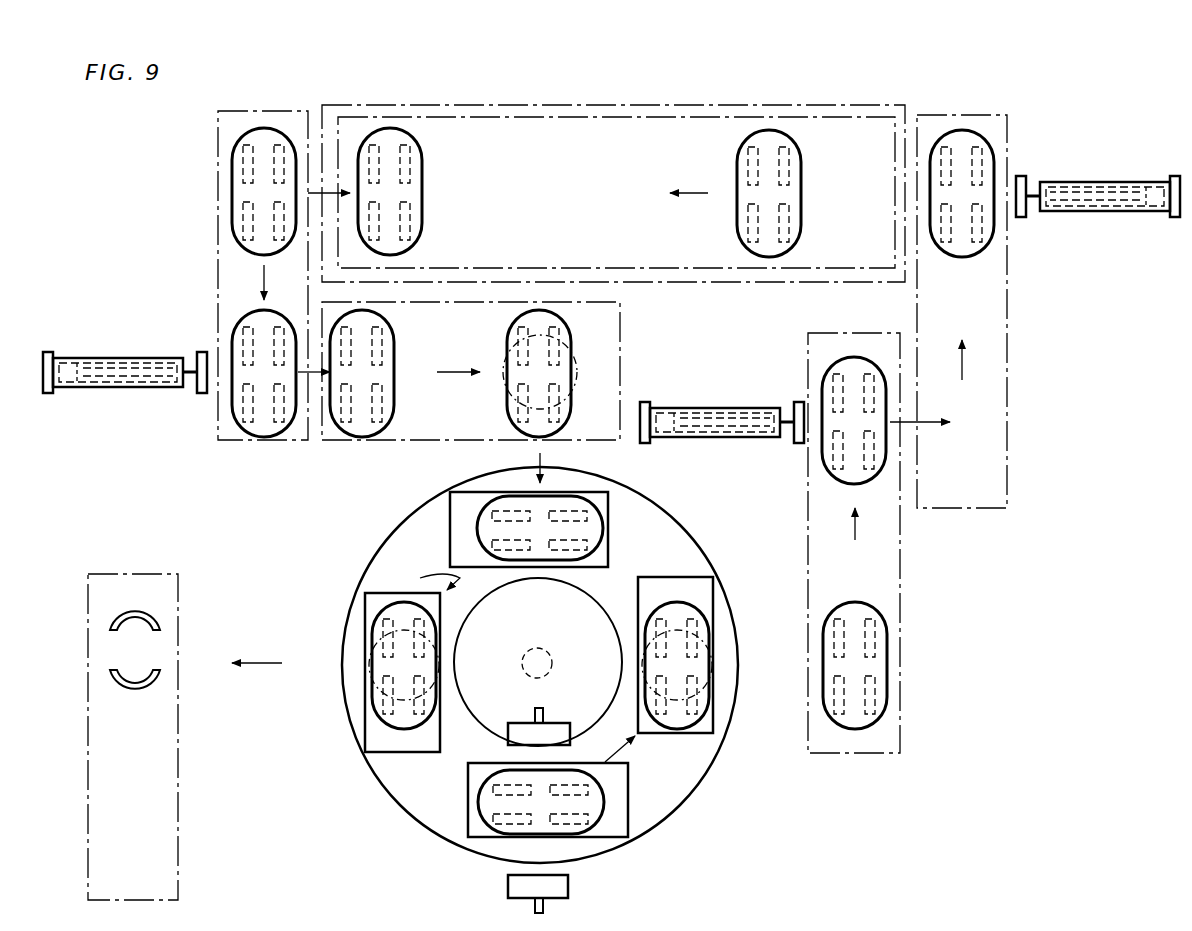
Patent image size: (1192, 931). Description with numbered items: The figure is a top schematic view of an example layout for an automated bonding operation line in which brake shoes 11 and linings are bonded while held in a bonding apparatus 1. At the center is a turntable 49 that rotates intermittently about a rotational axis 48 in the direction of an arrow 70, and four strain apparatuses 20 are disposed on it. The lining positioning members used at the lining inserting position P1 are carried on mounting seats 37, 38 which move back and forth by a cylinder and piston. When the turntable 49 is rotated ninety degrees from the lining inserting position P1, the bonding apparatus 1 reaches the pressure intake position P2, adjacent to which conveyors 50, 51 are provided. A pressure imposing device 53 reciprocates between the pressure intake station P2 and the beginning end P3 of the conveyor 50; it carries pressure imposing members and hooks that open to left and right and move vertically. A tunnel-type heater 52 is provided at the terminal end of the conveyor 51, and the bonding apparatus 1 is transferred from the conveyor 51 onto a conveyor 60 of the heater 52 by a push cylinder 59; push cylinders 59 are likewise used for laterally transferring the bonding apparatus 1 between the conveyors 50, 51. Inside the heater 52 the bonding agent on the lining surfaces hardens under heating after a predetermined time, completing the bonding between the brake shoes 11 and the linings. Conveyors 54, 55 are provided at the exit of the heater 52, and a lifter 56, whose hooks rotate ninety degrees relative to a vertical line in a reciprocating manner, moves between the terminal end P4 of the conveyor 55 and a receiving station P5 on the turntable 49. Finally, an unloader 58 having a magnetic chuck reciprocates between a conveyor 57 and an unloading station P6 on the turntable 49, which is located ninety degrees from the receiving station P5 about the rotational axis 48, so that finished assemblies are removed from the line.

The bonding apparatus 1 is at (232, 165).
The brake shoe 11 is at (148, 613).
The strain apparatus 20 is at (608, 525).
The mounting seat 37 is at (560, 722).
The mounting seat 38 is at (520, 888).
The rotational axis 48 is at (548, 648).
The turntable 49 is at (680, 793).
The conveyor 50 is at (900, 540).
The conveyor 51 is at (1010, 385).
The heater 52 is at (830, 105).
The pressure imposing device 53 is at (700, 645).
The conveyor 54 is at (218, 220).
The conveyor 55 is at (380, 440).
The lifter 56 is at (578, 380).
The conveyor 57 is at (180, 750).
The unloader 58 is at (372, 660).
The push cylinder 59 is at (152, 387).
The conveyor 60 is at (883, 117).
The arrow 70 is at (428, 568).
The lining inserting position P1 is at (635, 830).
The pressure intake position P2 is at (718, 600).
The beginning end of conveyor P3 is at (887, 720).
The terminal end of conveyor P4 is at (620, 345).
The receiving station P5 is at (600, 485).
The unloading station P6 is at (362, 620).